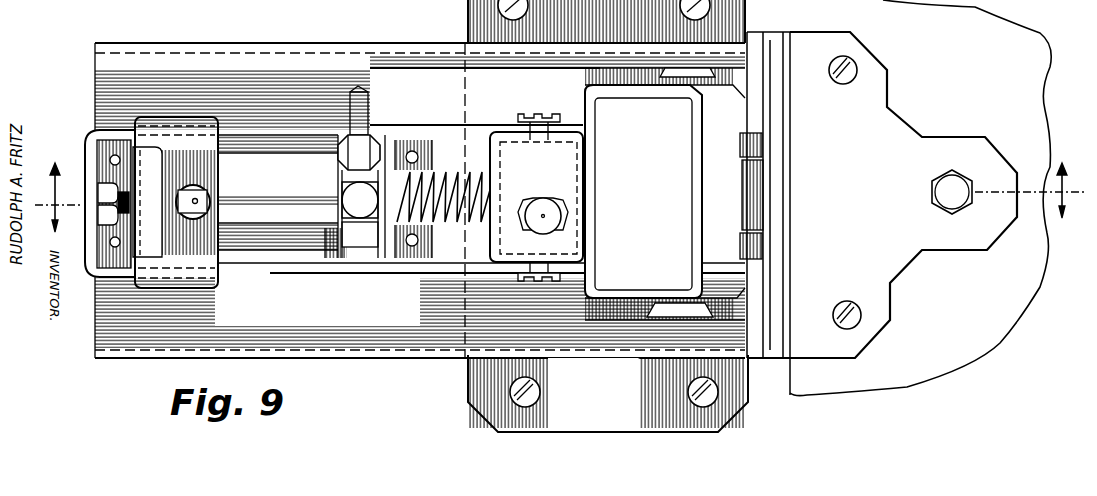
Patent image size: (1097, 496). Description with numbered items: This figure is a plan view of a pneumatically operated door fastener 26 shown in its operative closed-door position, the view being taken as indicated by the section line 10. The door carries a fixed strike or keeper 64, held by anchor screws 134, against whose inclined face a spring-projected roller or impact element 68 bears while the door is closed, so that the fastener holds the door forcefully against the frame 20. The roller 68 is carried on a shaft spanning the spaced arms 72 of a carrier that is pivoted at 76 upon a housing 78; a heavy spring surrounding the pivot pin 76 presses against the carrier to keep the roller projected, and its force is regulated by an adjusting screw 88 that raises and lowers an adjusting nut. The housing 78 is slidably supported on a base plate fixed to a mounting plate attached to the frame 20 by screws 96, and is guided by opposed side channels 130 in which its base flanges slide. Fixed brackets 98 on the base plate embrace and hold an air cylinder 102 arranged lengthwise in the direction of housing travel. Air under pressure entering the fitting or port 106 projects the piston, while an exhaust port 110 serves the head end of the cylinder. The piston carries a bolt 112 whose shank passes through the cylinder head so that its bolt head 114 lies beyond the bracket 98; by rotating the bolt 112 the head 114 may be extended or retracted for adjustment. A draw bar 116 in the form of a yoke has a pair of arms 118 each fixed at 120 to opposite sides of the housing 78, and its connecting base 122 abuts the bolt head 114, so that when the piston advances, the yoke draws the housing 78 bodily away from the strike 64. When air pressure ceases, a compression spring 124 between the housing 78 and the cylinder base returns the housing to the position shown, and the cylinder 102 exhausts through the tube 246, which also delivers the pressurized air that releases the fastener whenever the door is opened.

The section line 10- 10 is at (560, 208).
The frame 20 is at (775, 400).
The door fastener 26 is at (628, 108).
The strike or keeper 64 is at (775, 50).
The roller or impact element 68 is at (765, 185).
The spaced arms 72 is at (760, 143).
The pivot pin 76 is at (683, 65).
The housing 78 is at (652, 105).
The adjusting screw 88 is at (546, 198).
The screws 96 is at (765, 425).
The brackets 98 is at (148, 165).
The air cylinder 102 is at (275, 225).
The fitting or port 106 is at (350, 192).
The exhaust port 110 is at (195, 201).
The bolt 112 is at (128, 200).
The bolt head 114 is at (105, 190).
The draw bar 116 is at (440, 125).
The arms 118 is at (480, 125).
The fixing points 120 is at (526, 114).
The connecting portion or base 122 is at (85, 262).
The compression spring 124 is at (443, 184).
The side channels 130 is at (560, 75).
The anchor screws 134 is at (855, 66).
The tube 246 is at (368, 106).